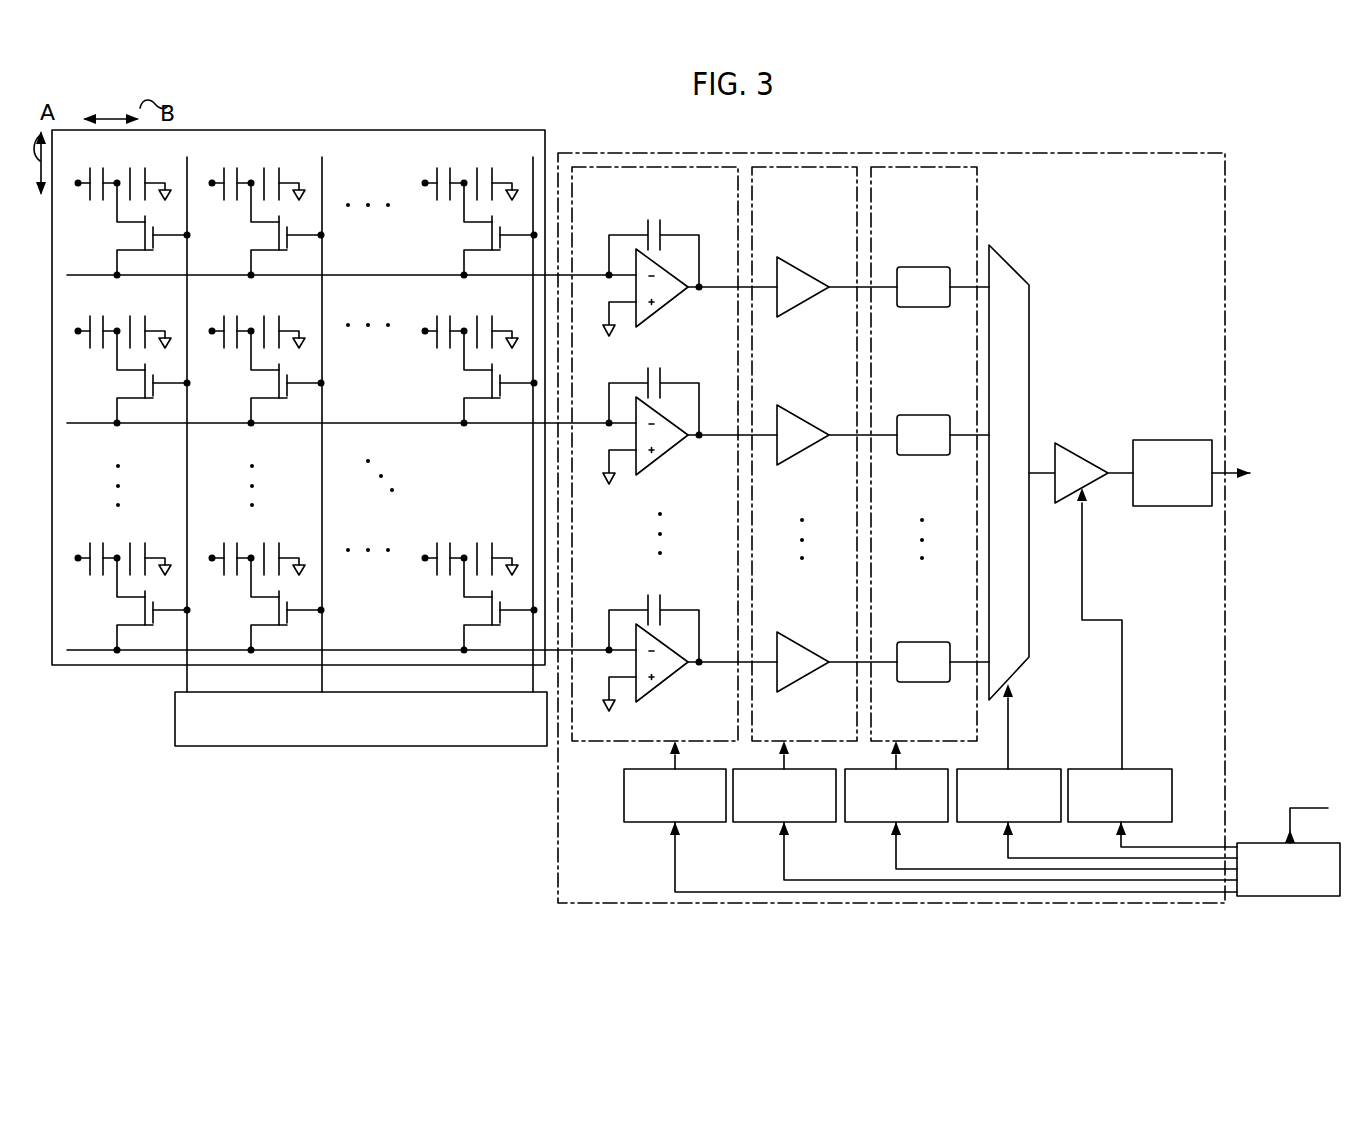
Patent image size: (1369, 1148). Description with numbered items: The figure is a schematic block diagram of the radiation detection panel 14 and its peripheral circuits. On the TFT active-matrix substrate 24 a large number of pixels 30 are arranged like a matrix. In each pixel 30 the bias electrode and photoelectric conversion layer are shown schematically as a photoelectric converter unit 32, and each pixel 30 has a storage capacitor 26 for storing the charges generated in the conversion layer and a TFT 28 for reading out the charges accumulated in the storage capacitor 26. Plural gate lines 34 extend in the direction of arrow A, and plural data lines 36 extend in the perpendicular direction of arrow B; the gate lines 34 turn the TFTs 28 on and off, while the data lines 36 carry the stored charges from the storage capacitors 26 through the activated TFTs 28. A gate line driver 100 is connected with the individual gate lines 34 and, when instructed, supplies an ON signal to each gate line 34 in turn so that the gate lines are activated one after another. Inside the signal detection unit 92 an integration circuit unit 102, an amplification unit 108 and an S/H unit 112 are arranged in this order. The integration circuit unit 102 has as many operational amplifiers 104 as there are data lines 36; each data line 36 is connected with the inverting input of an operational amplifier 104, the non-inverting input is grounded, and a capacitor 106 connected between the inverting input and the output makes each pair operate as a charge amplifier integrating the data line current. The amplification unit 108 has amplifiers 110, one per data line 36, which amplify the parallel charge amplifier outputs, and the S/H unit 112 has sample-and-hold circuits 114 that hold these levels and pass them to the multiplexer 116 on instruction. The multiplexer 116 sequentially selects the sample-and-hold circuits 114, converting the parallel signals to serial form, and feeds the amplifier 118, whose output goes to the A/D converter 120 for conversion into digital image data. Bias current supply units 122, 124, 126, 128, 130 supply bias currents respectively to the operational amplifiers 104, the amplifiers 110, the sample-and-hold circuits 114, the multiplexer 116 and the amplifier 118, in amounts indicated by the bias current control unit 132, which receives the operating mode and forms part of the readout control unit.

The radiation detection panel 14 is at (298, 379).
The TFT active-matrix substrate 24 is at (322, 130).
The storage capacitor 26 is at (497, 532).
The TFT 28 is at (507, 635).
The pixel 30 is at (447, 629).
The photoelectric converter unit 32 is at (450, 538).
The gate line 34 is at (187, 472).
The data line 36 is at (375, 275).
The signal detection unit 92 is at (1030, 153).
The gate line driver 100 is at (368, 746).
The integration circuit unit 102 is at (650, 167).
The operational amplifier 104 is at (675, 695).
The capacitor 106 is at (672, 589).
The amplification unit 108 is at (790, 167).
The amplifier 110 is at (808, 645).
The S/H unit 112 is at (871, 165).
The sample-and-hold circuit 114 is at (918, 642).
The multiplexer 116 is at (1012, 264).
The amplifier 118 is at (1086, 446).
The A/D converter 120 is at (1165, 440).
The bias current supply unit 122 is at (636, 822).
The bias current supply unit 124 is at (748, 822).
The bias current supply unit 126 is at (860, 822).
The bias current supply unit 128 is at (972, 822).
The bias current supply unit 130 is at (1088, 822).
The bias current control unit 132 is at (1275, 896).